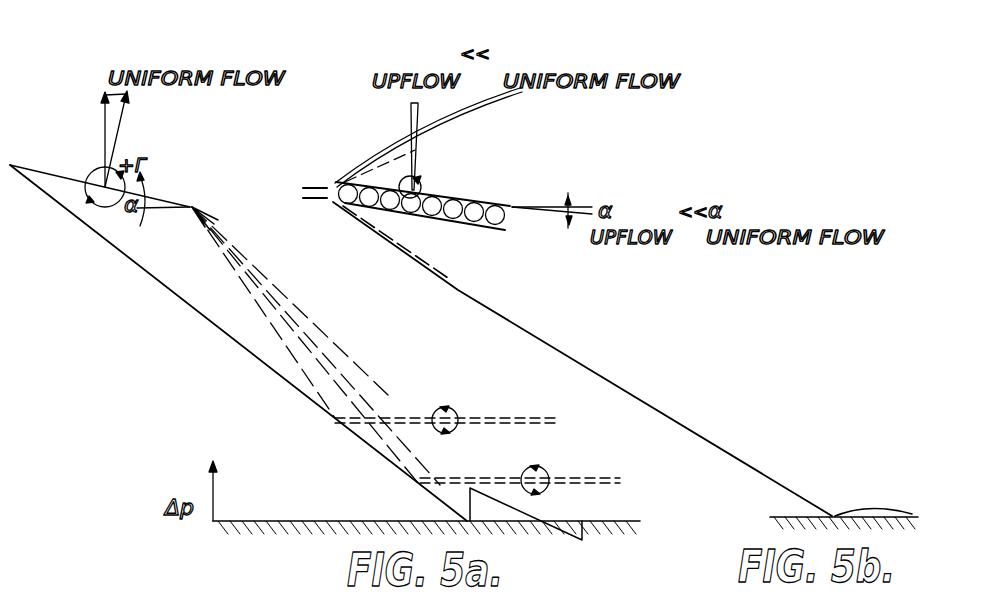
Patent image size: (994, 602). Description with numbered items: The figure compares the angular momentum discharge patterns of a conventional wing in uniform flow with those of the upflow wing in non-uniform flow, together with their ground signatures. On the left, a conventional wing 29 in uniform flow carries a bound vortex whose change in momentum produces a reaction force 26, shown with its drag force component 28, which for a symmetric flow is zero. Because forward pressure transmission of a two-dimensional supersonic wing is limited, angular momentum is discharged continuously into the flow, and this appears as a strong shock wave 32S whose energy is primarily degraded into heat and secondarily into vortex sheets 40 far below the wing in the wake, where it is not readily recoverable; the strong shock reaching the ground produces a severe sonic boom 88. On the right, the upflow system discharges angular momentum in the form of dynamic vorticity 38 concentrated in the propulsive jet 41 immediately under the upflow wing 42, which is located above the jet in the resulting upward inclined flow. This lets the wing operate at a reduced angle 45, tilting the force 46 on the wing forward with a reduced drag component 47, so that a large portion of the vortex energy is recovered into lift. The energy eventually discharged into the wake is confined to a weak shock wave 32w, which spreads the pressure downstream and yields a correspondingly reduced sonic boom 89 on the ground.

In FIG. 5A, the reaction force 26 is at (127, 112).
In FIG. 5A, the drag force component 28 is at (110, 40).
In FIG. 5B, the drag force component 28 is at (508, 42).
In FIG. 5A, the conventional wing 29 is at (58, 176).
In FIG. 5A, the strong shock wave 32S is at (238, 343).
In FIG. 5B, the weak shock wave 32w is at (510, 322).
In FIG. 5B, the dynamic vorticity 38 is at (425, 218).
In FIG. 5A, the vortex sheets 40 is at (457, 410).
In FIG. 5B, the propulsive jet 41 is at (510, 222).
In FIG. 5B, the upflow wing 42 is at (457, 195).
In FIG. 5B, the reduced angle 45 is at (559, 199).
In FIG. 5B, the force on the wing 46 is at (420, 148).
In FIG. 5B, the reduced drag component 47 is at (392, 40).
In FIG. 5A, the severe sonic boom 88 is at (540, 519).
In FIG. 5B, the reduced sonic boom 89 is at (873, 508).